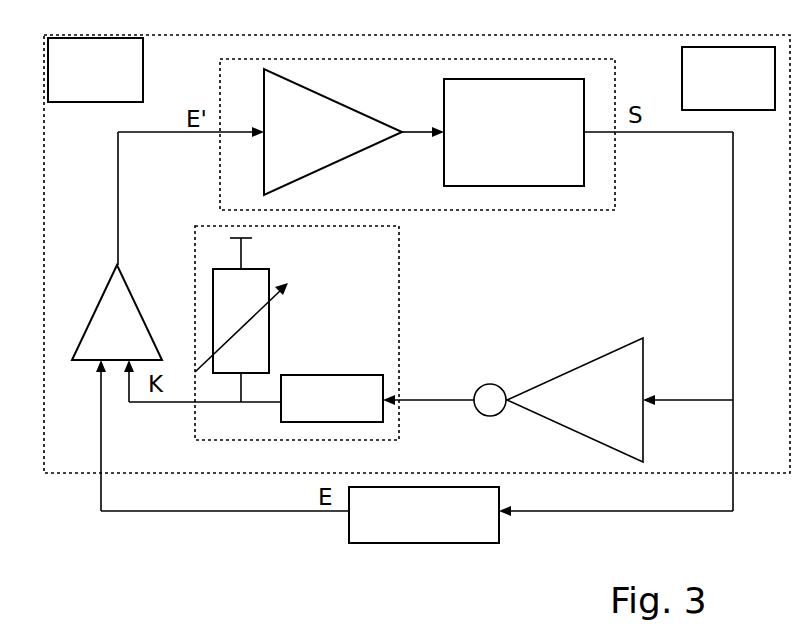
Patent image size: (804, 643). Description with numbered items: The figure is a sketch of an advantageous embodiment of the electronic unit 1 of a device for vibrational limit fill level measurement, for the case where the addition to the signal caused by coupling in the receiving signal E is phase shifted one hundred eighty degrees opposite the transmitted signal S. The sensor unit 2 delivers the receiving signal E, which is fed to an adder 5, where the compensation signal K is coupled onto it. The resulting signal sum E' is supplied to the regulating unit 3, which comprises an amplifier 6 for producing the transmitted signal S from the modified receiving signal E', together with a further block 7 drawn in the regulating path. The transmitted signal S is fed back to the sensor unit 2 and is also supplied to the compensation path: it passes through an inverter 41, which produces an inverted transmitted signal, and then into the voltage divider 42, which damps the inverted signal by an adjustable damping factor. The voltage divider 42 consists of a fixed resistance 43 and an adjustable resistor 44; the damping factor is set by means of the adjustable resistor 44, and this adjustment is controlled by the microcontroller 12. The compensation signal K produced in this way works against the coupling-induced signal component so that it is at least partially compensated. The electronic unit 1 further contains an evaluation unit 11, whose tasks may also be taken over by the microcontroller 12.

The electronic unit 1 is at (73, 473).
The sensor unit 2 is at (436, 532).
The regulating unit 3 is at (220, 79).
The adder 5 is at (121, 345).
The amplifier 6 is at (306, 145).
The output unit 7 is at (509, 145).
The evaluation unit 11 is at (82, 79).
The microcontroller 12 is at (742, 87).
The inverter 41 is at (576, 410).
The voltage divider 42 is at (403, 259).
The fixed resistance 43 is at (318, 414).
The adjustable resistor 44 is at (224, 315).